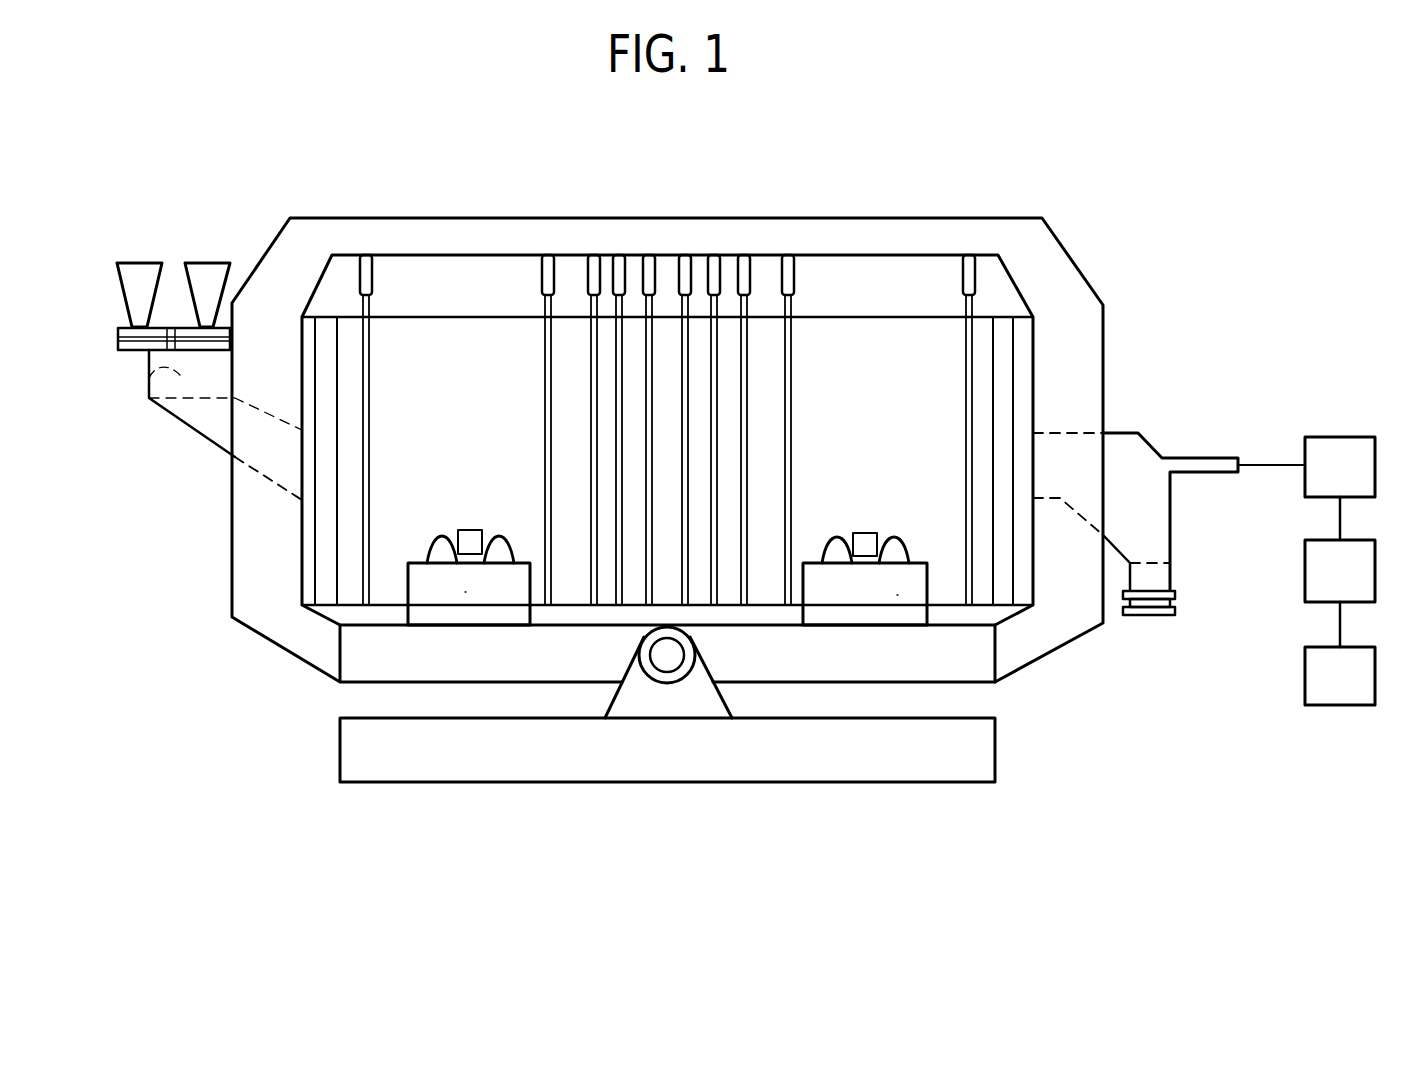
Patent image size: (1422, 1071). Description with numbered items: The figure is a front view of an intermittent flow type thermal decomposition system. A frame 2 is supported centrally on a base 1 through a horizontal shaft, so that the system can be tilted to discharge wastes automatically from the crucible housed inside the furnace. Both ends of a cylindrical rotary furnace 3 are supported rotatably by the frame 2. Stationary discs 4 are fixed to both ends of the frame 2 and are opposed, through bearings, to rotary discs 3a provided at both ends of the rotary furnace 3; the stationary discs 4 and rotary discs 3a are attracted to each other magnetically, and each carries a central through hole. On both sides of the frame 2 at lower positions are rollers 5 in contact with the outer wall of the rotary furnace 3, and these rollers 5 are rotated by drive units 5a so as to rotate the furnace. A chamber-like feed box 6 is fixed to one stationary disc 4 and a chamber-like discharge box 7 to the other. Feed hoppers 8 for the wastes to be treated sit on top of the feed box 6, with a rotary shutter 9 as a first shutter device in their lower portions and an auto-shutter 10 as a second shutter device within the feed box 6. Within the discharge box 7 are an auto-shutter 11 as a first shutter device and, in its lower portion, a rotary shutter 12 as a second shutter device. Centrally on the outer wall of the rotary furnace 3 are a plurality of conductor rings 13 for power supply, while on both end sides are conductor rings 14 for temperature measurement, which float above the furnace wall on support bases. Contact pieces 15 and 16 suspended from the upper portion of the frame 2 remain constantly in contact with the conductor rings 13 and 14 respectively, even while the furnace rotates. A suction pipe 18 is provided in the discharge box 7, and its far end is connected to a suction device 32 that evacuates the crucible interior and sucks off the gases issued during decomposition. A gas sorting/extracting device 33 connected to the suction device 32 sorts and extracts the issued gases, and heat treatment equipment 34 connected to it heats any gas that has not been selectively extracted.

The base 1 is at (755, 757).
The frame 2 is at (980, 237).
The rotary furnace 3 is at (863, 365).
The rotary disc 3a is at (330, 347).
The stationary disc 4 is at (308, 513).
The roller 5 is at (470, 532).
The drive unit 5a is at (465, 592).
The feed box 6 is at (217, 417).
The discharge box 7 is at (1130, 446).
The feed hopper 8 is at (142, 275).
The rotary shutter 9 is at (118, 337).
The auto-shutter 10 is at (667, 655).
The auto-shutter 11 is at (1155, 575).
The rotary shutter 12 is at (1175, 592).
The conductor ring 13 is at (590, 365).
The conductor ring 14 is at (370, 310).
The contact piece 15 is at (592, 270).
The contact piece 16 is at (368, 272).
The suction pipe 18 is at (1213, 462).
The suction device 32 is at (1355, 473).
The gas sorting/extracting device 33 is at (1355, 581).
The heat treatment equipment 34 is at (1355, 686).